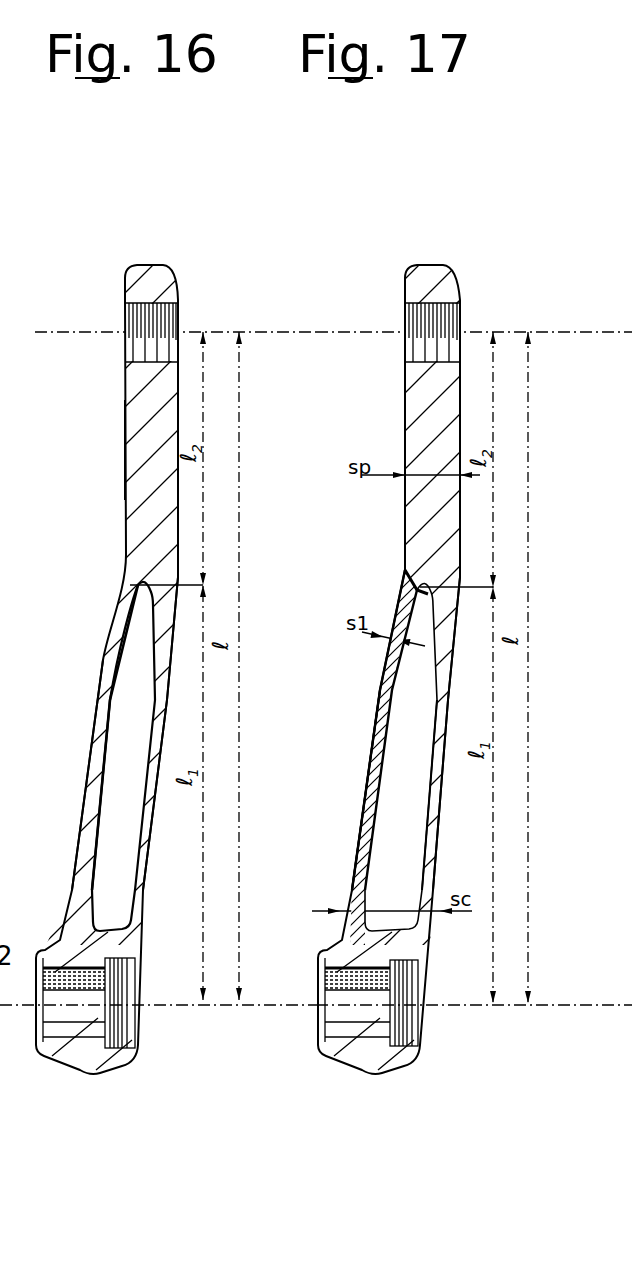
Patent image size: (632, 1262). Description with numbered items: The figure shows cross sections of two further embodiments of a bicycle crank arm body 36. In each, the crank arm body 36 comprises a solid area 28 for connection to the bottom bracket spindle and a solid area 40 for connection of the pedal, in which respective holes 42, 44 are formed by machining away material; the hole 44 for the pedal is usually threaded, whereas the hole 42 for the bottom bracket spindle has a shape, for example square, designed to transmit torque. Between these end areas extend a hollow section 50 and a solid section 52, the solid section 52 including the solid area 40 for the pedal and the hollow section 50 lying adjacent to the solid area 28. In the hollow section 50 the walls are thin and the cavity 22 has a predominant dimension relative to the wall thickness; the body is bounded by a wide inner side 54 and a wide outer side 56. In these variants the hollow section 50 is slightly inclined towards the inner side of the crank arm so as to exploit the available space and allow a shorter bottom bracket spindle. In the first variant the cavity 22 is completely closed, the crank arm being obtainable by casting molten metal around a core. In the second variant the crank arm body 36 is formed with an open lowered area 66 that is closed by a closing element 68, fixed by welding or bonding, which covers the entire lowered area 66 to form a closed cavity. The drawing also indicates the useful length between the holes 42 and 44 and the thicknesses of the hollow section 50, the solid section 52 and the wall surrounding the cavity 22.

In FIG. 16, the cavity 22 is at (141, 712).
In FIG. 16, the solid area for connection to the bottom bracket spindle 28 is at (50, 953).
In FIG. 17, the solid area for connection to the bottom bracket spindle 28 is at (302, 950).
In FIG. 16, the crank arm body 36 is at (105, 272).
In FIG. 17, the crank arm body 36 is at (375, 277).
In FIG. 16, the solid area for connection of the pedal 40 is at (167, 383).
In FIG. 17, the solid area for connection of the pedal 40 is at (420, 400).
In FIG. 16, the hole for connection to the bottom bracket spindle 42 is at (60, 982).
In FIG. 17, the hole for connection to the bottom bracket spindle 42 is at (345, 980).
In FIG. 16, the hole for connection of the pedal 44 is at (165, 312).
In FIG. 17, the hole for connection of the pedal 44 is at (447, 312).
In FIG. 16, the hollow section 50 is at (86, 790).
In FIG. 17, the hollow section 50 is at (362, 842).
In FIG. 16, the solid section 52 is at (118, 445).
In FIG. 17, the solid section 52 is at (393, 444).
In FIG. 16, the wide inner side 54 is at (100, 663).
In FIG. 17, the wide inner side 54 is at (382, 680).
In FIG. 16, the wide outer side 56 is at (170, 672).
In FIG. 17, the wide outer side 56 is at (460, 652).
In FIG. 17, the open lowered area 66 is at (425, 760).
In FIG. 17, the closing element 68 is at (378, 730).